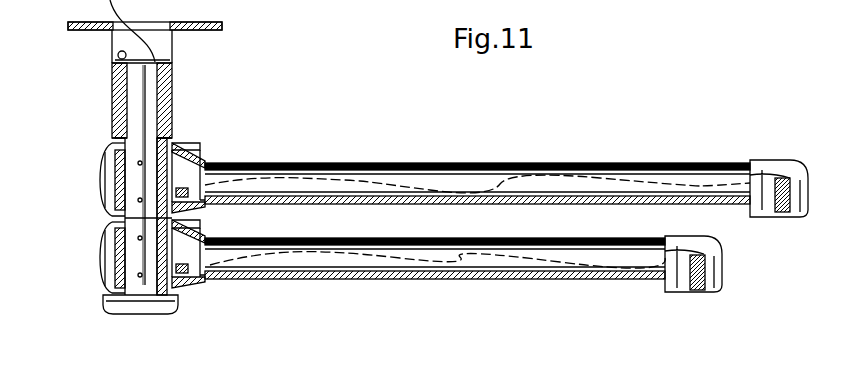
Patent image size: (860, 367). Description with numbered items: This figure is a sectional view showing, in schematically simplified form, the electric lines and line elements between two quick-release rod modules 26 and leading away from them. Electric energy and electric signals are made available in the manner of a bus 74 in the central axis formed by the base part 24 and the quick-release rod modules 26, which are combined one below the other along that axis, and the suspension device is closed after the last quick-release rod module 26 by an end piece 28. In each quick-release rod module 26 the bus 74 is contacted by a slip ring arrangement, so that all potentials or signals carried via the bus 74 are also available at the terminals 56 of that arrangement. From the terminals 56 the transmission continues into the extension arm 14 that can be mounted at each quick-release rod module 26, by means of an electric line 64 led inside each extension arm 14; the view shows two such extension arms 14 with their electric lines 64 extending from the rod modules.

The extension arm 14 is at (352, 182).
The base part 24 is at (122, 92).
The quick-release rod module 26 is at (118, 203).
The end piece 28 is at (140, 302).
The terminals 56 is at (225, 158).
The electric line 64 is at (427, 176).
The bus 74 is at (155, 108).